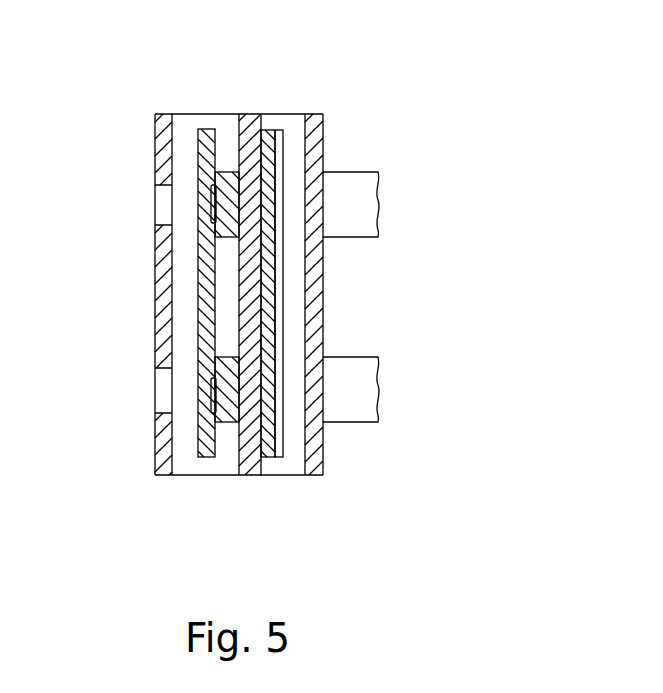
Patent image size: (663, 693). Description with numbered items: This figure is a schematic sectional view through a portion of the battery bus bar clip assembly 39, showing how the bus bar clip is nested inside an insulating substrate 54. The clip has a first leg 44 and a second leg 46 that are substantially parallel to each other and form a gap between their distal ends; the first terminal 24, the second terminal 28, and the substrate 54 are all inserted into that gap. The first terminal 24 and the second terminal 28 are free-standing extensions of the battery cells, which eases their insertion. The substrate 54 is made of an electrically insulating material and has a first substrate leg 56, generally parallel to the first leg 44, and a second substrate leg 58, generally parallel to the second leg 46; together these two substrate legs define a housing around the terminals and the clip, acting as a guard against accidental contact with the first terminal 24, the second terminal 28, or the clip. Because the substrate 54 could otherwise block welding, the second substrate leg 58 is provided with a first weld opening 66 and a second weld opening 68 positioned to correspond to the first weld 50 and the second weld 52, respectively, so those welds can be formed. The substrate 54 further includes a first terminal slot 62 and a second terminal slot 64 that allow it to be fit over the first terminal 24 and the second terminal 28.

The battery bus bar clip assembly 39 is at (368, 457).
The second substrate leg 58 is at (155, 143).
The second weld opening 68 is at (162, 218).
The first weld opening 66 is at (160, 393).
The second leg 46 is at (208, 129).
The second weld 52 is at (212, 215).
The first weld 50 is at (212, 393).
The second terminal slot 64 is at (224, 172).
The first terminal slot 62 is at (240, 423).
The substrate 54 is at (254, 500).
The first leg 44 is at (265, 129).
The first substrate leg 56 is at (318, 141).
The second terminal 28 is at (232, 217).
The first terminal 24 is at (227, 392).